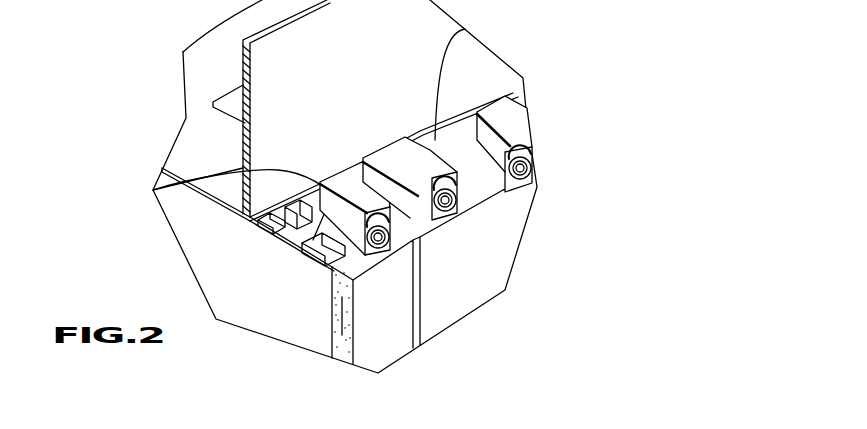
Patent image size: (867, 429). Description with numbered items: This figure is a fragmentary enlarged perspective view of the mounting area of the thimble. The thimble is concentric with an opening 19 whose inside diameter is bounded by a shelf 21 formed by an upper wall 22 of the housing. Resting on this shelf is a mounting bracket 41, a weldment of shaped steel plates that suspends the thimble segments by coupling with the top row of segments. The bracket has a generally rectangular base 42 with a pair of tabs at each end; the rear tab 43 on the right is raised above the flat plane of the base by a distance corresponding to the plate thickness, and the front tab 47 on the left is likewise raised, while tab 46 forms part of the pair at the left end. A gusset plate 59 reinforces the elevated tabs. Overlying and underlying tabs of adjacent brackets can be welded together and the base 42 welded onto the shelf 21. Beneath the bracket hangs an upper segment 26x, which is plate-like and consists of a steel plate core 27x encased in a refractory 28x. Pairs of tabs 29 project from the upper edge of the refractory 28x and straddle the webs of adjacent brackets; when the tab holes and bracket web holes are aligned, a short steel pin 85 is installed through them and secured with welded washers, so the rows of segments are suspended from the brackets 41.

The upper wall 22 is at (212, 153).
The base 42 is at (153, 190).
The rear tab 43 is at (465, 29).
The tab 46 is at (300, 232).
The shelf 21 is at (310, 233).
The front tab 47 is at (510, 160).
The gusset plate 59 is at (506, 128).
The opening 19 is at (463, 183).
The tabs 29 is at (470, 135).
The pin 85 is at (527, 173).
The mounting bracket 41 is at (403, 210).
The refractory 28x is at (365, 348).
The upper segment 26x is at (390, 333).
The plate core 27x is at (355, 328).